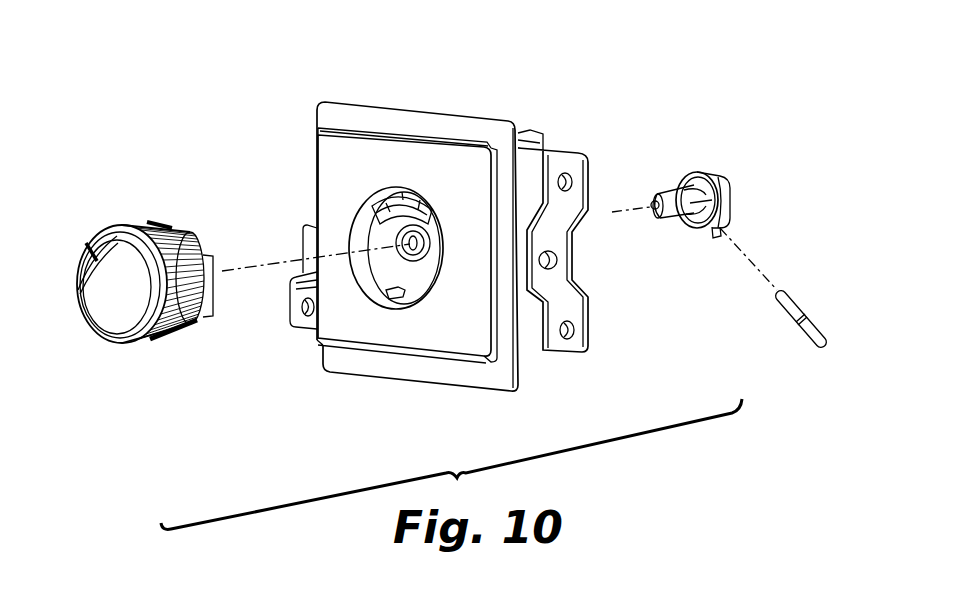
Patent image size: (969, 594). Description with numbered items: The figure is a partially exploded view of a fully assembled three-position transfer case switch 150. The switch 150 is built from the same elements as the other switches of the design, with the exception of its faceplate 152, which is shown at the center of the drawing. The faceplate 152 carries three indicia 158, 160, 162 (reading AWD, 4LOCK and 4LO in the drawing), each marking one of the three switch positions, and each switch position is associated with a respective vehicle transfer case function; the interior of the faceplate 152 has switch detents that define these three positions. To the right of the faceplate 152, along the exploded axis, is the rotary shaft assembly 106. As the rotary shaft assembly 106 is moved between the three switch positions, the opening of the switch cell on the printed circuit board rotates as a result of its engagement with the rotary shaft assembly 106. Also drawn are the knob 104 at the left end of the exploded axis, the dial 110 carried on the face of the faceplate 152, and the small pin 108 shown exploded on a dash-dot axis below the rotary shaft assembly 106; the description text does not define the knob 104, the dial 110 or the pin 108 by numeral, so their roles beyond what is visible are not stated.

The knob 104 is at (122, 298).
The rotary shaft assembly 106 is at (702, 172).
The pin 108 is at (797, 302).
The dial 110 is at (428, 279).
The three-position transfer case switch 150 is at (439, 225).
The faceplate 152 is at (378, 383).
The indicia 158 is at (350, 166).
The indicia 160 is at (404, 153).
The indicia 162 is at (445, 173).